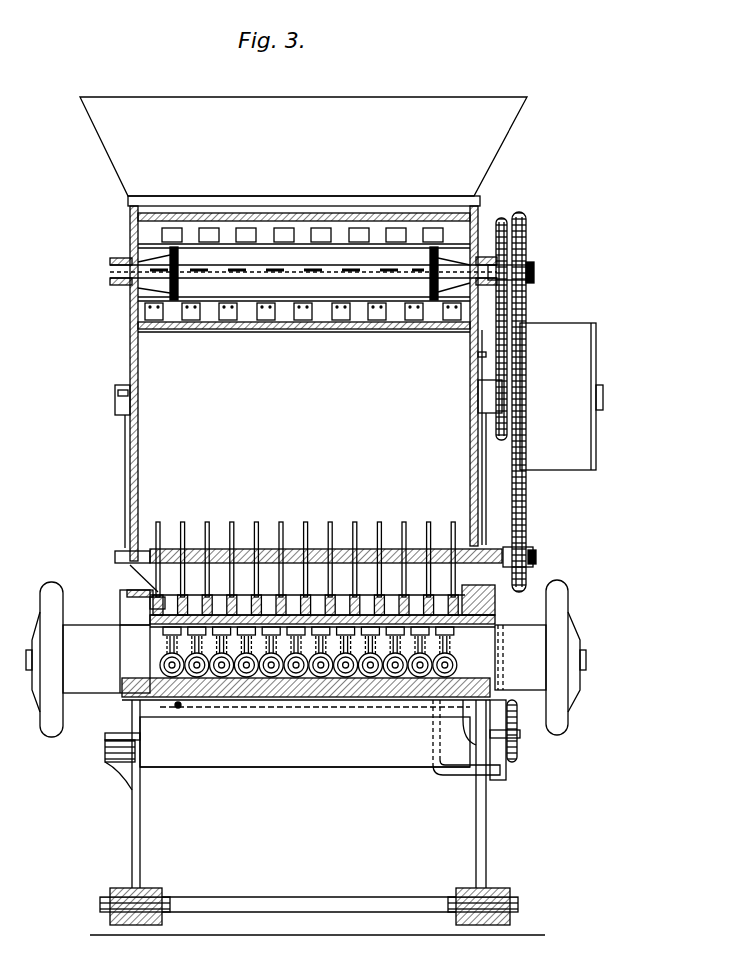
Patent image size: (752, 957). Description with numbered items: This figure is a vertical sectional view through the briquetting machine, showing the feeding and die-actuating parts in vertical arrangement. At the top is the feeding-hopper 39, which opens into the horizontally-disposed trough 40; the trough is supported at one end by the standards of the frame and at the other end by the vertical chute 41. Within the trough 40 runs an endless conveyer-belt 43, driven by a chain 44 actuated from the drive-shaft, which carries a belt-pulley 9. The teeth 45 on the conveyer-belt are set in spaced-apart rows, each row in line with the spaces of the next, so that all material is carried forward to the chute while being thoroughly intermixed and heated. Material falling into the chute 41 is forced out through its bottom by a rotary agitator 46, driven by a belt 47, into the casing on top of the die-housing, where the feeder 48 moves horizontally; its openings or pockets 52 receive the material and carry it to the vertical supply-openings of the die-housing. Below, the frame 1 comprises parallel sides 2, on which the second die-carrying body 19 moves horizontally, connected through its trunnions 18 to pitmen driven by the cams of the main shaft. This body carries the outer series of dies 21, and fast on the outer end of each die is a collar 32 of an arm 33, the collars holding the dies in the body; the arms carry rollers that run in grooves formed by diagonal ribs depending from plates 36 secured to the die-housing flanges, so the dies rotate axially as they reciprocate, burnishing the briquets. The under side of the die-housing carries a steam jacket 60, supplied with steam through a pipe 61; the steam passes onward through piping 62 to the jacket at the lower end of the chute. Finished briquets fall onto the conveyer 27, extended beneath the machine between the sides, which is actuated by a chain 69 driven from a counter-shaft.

The frame 1 is at (317, 881).
The sides 2 is at (140, 797).
The belt-pulley 9 is at (561, 396).
The trunnions 18 is at (92, 635).
The second die-carrying body 19 is at (358, 700).
The dies 21 is at (303, 697).
The conveyer 27 is at (343, 755).
The collar 32 is at (180, 675).
The arm 33 is at (172, 650).
The plates 36 is at (167, 637).
The feeding-hopper 39 is at (303, 151).
The trough 40 is at (458, 230).
The vertical chute 41 is at (308, 383).
The endless conveyer-belt 43 is at (383, 244).
The chain 44 is at (497, 323).
The teeth 45 is at (252, 232).
The rotary agitator 46 is at (273, 305).
The belt 47 is at (530, 522).
The feeder 48 is at (308, 597).
The openings or pockets 52 is at (218, 608).
The steam jacket 60 is at (253, 700).
The pipe 61 is at (175, 708).
The piping 62 is at (435, 768).
The chain 69 is at (518, 775).